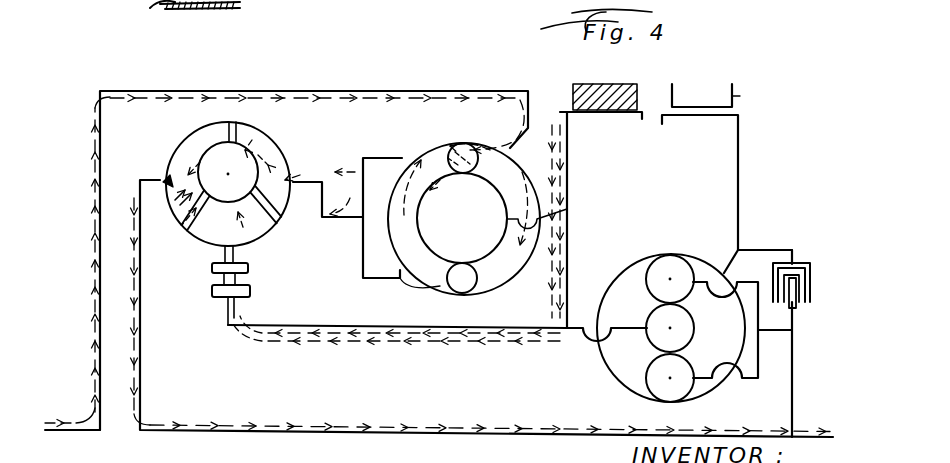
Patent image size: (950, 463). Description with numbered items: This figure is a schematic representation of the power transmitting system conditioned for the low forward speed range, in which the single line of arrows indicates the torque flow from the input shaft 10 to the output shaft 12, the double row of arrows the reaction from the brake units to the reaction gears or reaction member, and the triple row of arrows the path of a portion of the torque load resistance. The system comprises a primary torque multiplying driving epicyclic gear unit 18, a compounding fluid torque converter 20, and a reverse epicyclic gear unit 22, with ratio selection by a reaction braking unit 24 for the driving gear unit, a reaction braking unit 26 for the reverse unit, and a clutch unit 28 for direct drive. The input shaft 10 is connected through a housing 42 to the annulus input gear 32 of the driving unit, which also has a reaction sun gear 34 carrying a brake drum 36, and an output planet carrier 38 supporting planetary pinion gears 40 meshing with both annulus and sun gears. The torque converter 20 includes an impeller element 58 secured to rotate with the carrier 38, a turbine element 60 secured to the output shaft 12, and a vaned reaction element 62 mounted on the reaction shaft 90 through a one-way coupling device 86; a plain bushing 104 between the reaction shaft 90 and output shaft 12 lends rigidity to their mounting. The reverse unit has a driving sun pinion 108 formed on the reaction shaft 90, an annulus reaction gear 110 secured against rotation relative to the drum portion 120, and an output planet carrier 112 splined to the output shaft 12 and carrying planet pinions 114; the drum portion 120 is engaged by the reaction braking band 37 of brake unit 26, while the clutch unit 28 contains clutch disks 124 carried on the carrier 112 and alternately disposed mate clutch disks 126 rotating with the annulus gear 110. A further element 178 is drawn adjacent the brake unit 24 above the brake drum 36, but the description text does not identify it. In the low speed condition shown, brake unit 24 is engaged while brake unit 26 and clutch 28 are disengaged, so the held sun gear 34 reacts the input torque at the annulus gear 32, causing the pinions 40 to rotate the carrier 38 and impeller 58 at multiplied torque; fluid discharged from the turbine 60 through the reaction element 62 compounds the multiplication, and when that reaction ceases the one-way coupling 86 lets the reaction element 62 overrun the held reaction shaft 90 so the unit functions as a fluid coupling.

The input shaft 10 is at (82, 433).
The output shaft 12 is at (394, 427).
The driving epicyclic gear unit 18 is at (522, 257).
The fluid torque converter 20 is at (222, 160).
The reverse gear unit 22 is at (640, 310).
The reaction braking unit 24 is at (612, 100).
The reaction braking unit 26 is at (708, 101).
The clutch unit 28 is at (806, 292).
The annulus input gear 32 is at (428, 153).
The reaction sun gear 34 is at (418, 221).
The brake drum 36 is at (566, 112).
The reaction braking band 37 is at (736, 98).
The output planet carrier 38 is at (363, 262).
The planetary pinion gears 40 is at (448, 173).
The housing 42 is at (249, 88).
The impeller element 58 is at (272, 140).
The turbine element 60 is at (176, 156).
The reaction element 62 is at (257, 233).
The one-way coupling device 86 is at (250, 274).
The reaction shaft 90 is at (311, 323).
The plain bushing 104 is at (178, 9).
The driving sun pinion 108 is at (688, 346).
The annulus reaction gear 110 is at (618, 368).
The output planet carrier 112 is at (760, 362).
The planet pinions 114 is at (686, 299).
The drum portion 120 is at (708, 118).
The clutch disks 124 is at (793, 306).
The mate clutch disks 126 is at (804, 271).
The plate 178 is at (573, 112).